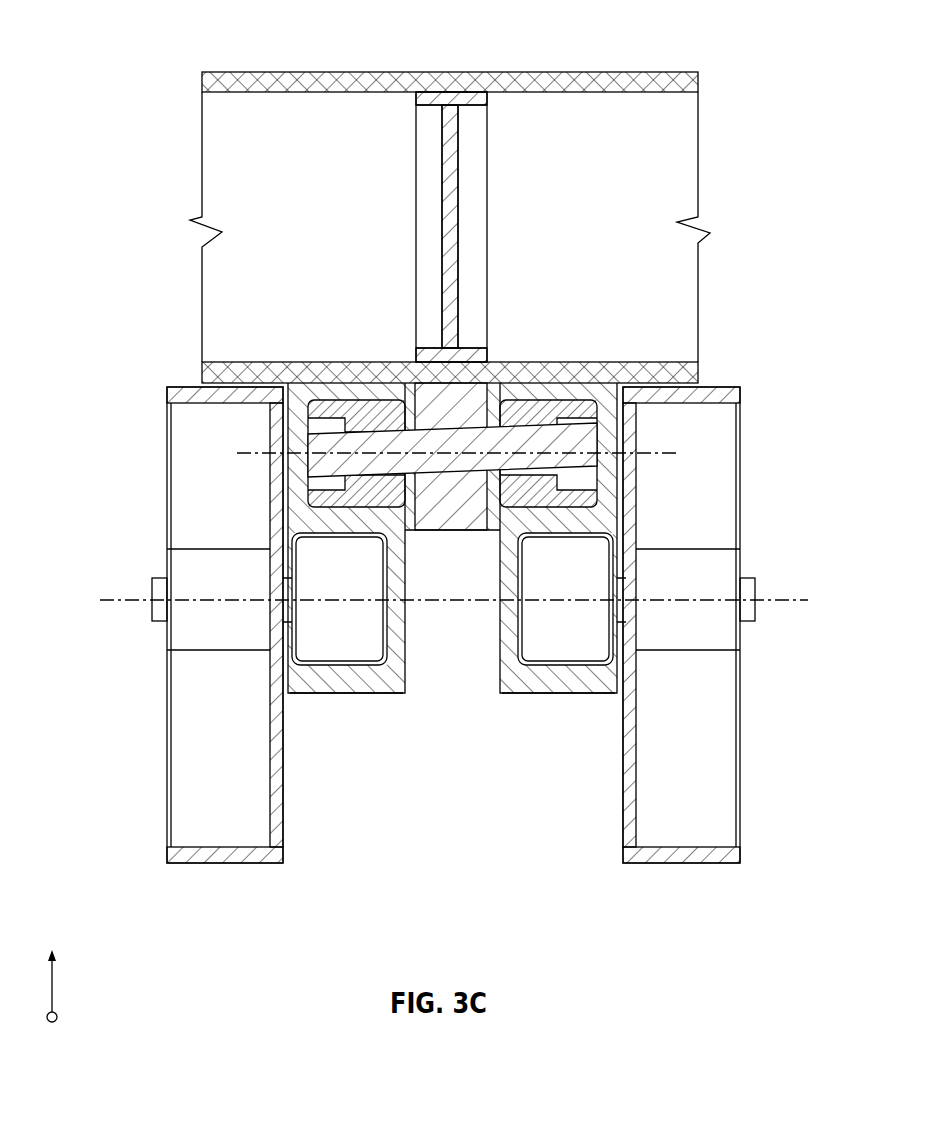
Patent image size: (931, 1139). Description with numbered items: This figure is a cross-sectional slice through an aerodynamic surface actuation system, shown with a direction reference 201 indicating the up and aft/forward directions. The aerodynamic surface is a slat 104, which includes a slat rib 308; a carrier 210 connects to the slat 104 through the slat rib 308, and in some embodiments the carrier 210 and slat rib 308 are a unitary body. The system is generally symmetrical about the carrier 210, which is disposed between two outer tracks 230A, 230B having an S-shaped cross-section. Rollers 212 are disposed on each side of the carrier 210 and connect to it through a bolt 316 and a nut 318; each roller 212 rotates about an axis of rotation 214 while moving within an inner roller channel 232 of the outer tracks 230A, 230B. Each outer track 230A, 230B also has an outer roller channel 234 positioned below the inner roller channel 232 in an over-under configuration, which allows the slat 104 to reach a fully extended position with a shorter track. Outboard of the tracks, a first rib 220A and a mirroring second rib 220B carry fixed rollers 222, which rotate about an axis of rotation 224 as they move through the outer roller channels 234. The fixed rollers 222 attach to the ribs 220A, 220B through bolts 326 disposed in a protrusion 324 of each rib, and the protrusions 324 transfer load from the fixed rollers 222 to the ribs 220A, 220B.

The slat 104 is at (262, 72).
The slat rib 308 is at (488, 188).
The carrier 210 is at (470, 405).
The bolt 316 is at (385, 415).
The nut 318 is at (575, 415).
The roller 212 is at (548, 494).
The axis of rotation 214 is at (266, 453).
The inner roller channel 232 is at (567, 510).
The outer track 230B is at (393, 694).
The outer track 230A is at (545, 694).
The outer roller channel 234 is at (527, 695).
The fixed roller 222 is at (325, 641).
The second rib 220B is at (167, 857).
The first rib 220A is at (740, 857).
The protrusion 324 is at (218, 549).
The bolt 326 is at (152, 585).
The axis of rotation 224 is at (126, 600).
The coordinate reference frame 201 is at (116, 977).